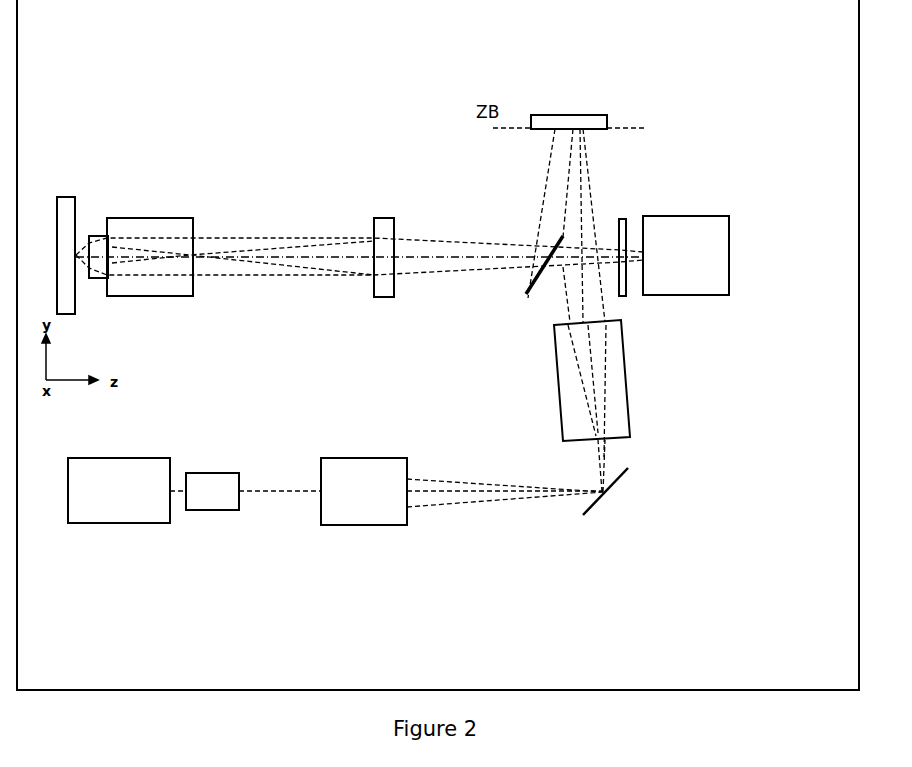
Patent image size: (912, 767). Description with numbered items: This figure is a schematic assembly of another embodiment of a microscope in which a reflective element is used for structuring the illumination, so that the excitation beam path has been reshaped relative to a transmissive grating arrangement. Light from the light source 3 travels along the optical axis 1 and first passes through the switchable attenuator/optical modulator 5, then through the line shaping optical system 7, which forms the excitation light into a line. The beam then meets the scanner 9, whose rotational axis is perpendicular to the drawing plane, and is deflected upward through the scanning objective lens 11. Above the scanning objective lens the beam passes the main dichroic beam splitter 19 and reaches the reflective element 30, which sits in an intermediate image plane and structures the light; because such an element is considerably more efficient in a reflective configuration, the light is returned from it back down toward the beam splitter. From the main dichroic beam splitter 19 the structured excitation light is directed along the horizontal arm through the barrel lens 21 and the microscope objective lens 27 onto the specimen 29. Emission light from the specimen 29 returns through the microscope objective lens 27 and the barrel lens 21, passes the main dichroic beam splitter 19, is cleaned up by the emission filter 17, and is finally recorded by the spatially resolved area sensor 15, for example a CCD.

The optical axis 1 is at (253, 490).
The light source 3 is at (136, 491).
The switchable attenuator/optical modulator 5 is at (203, 498).
The line shaping optical system 7 is at (343, 500).
The scanner 9 is at (610, 498).
The scanning objective lens 11 is at (637, 413).
The spatially resolved area sensor 15 is at (728, 214).
The emission filter 17 is at (625, 218).
The main dichroic beam splitter 19 is at (528, 298).
The barrel lens 21 is at (391, 225).
The microscope objective lens 27 is at (123, 273).
The specimen 29 is at (66, 212).
The reflective element 30 is at (588, 110).